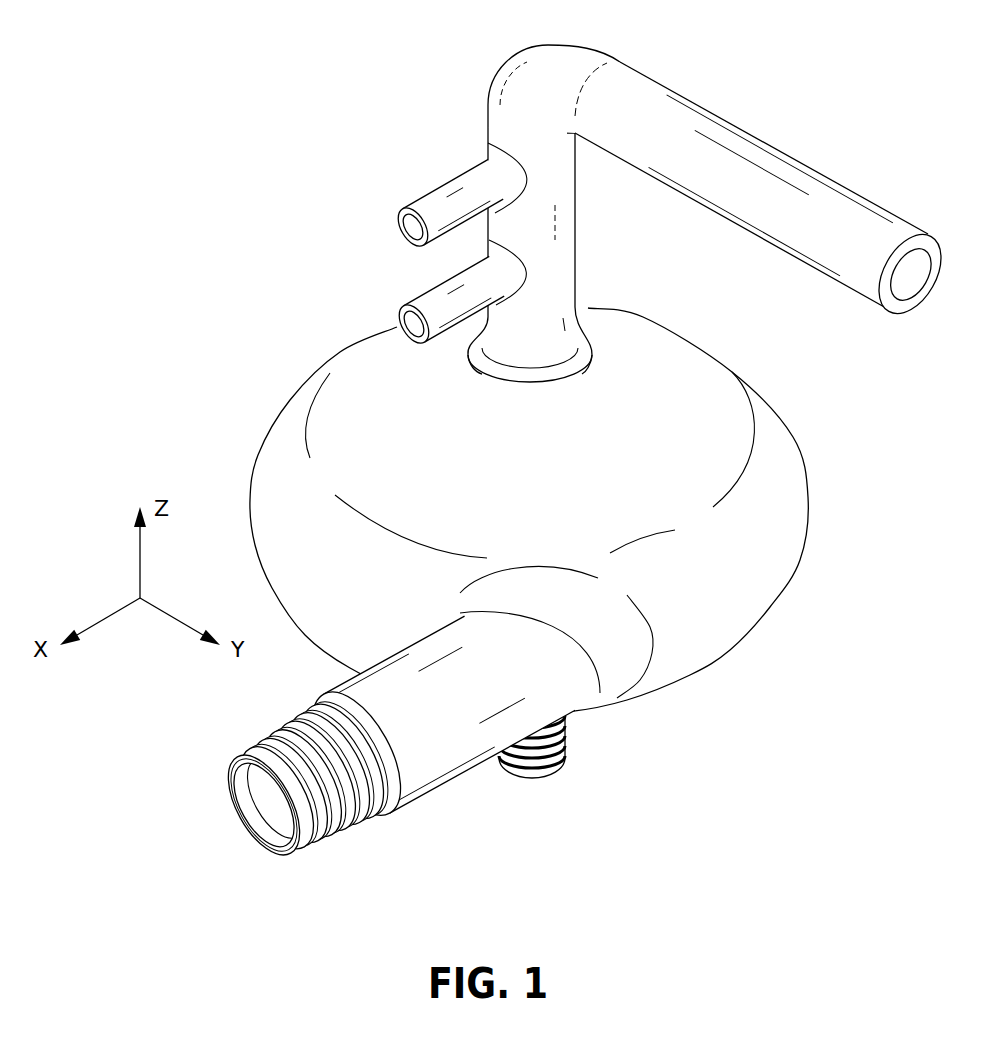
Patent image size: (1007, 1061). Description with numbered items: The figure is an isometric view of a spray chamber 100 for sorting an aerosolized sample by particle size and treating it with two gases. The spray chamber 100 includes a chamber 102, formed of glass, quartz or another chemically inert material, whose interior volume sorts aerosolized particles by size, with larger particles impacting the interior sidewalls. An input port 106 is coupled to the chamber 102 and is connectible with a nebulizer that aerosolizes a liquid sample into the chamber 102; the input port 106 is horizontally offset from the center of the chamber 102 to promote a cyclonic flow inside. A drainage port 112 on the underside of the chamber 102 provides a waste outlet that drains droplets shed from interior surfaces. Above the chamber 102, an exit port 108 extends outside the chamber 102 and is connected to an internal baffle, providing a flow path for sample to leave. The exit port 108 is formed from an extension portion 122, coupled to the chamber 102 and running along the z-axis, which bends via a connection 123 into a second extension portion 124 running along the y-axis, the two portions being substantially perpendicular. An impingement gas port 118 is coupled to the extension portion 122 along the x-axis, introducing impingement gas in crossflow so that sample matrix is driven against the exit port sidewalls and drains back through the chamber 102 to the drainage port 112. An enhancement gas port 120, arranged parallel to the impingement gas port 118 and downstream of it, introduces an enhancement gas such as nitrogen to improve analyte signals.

The spray chamber 100 is at (397, 42).
The chamber 102 is at (785, 535).
The input port 106 is at (358, 833).
The exit port 108 is at (764, 180).
The drainage port 112 is at (550, 768).
The impingement gas port 118 is at (433, 298).
The enhancement gas port 120 is at (430, 200).
The extension portion 122 is at (560, 220).
The connection 123 is at (555, 60).
The extension portion 124 is at (677, 92).